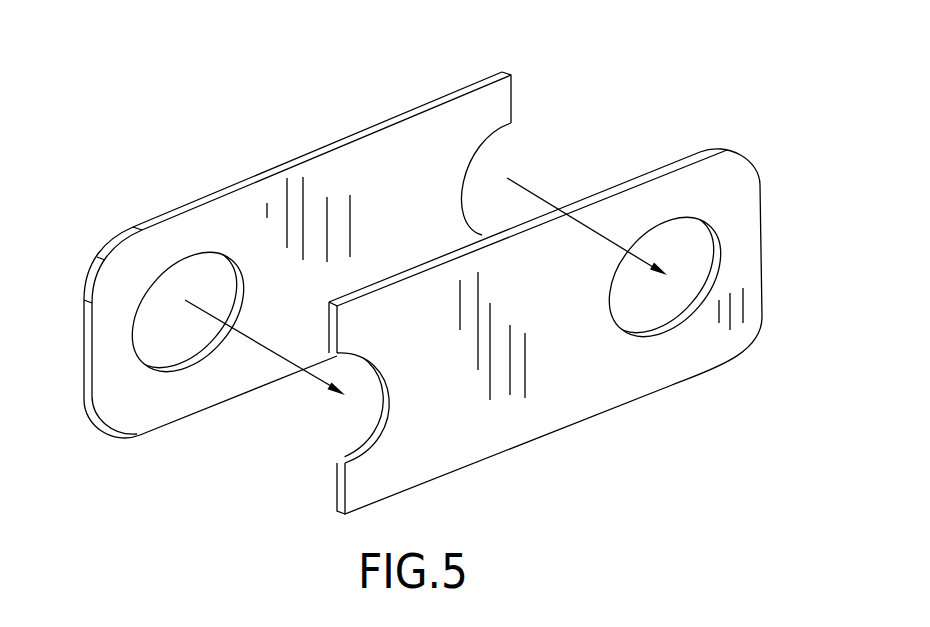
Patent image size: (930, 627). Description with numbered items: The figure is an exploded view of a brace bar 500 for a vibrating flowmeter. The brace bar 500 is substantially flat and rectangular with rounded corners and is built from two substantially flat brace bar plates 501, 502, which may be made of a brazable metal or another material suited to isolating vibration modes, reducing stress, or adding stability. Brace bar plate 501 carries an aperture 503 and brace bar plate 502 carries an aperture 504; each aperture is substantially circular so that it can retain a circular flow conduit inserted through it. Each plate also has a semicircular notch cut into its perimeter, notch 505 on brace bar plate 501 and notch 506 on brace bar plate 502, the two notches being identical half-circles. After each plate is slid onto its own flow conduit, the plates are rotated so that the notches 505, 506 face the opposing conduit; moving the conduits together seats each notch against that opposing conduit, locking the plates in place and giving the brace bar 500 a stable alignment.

The brace bar 500 is at (138, 84).
The brace bar plate 501 is at (215, 208).
The brace bar plate 502 is at (632, 377).
The aperture 503 is at (132, 330).
The aperture 504 is at (722, 265).
The notch 505 is at (482, 156).
The notch 506 is at (387, 400).